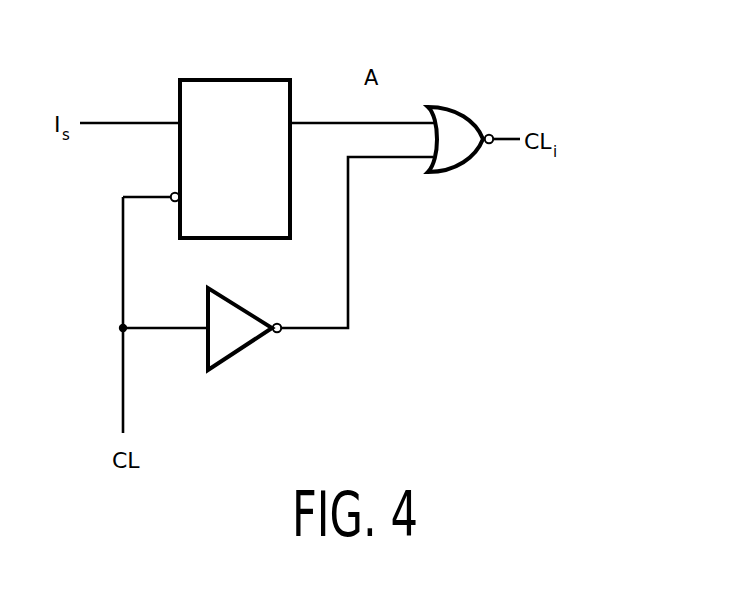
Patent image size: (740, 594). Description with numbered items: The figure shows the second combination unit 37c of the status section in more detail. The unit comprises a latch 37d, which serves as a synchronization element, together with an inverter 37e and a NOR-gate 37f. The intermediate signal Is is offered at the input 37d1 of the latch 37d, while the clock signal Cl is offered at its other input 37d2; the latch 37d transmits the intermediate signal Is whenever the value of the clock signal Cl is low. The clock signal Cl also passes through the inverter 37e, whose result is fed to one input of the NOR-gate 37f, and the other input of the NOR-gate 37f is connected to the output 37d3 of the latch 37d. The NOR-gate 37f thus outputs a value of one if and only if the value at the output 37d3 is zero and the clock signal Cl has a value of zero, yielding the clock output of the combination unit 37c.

The second combination unit 37c is at (395, 382).
The latch 37d is at (250, 93).
The input 37d1 is at (178, 103).
The input 37d2 is at (176, 193).
The output 37d3 is at (373, 97).
The inverter 37e is at (230, 342).
The NOR-gate 37f is at (457, 163).